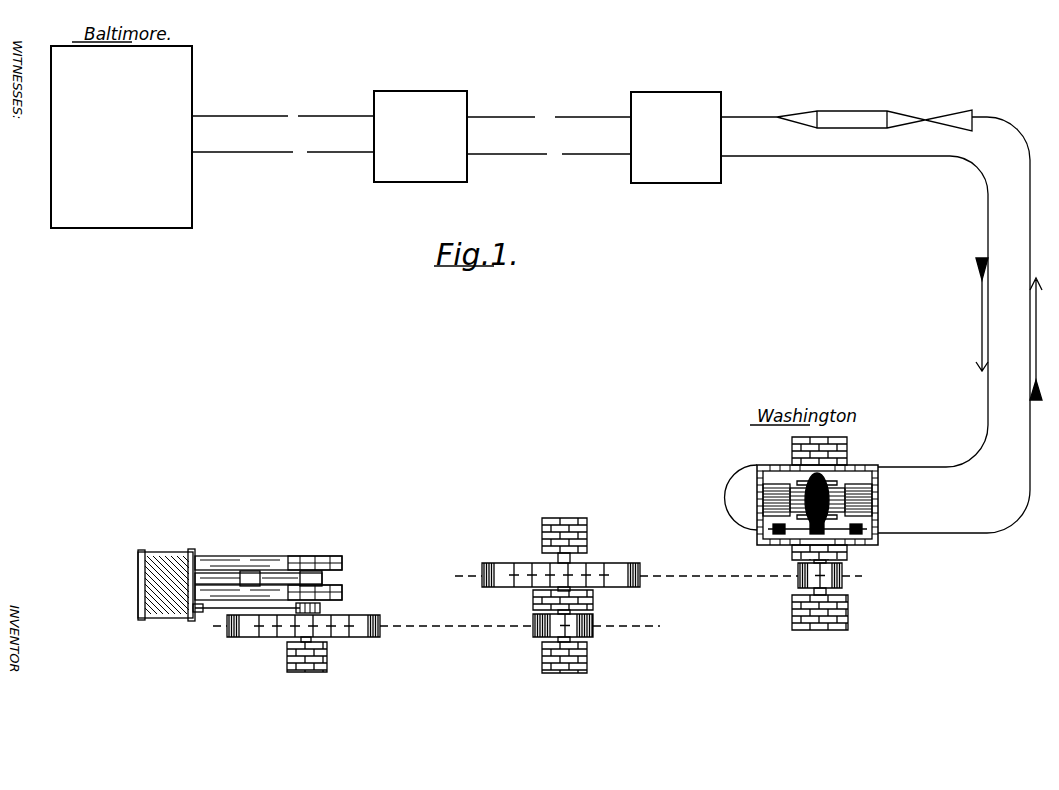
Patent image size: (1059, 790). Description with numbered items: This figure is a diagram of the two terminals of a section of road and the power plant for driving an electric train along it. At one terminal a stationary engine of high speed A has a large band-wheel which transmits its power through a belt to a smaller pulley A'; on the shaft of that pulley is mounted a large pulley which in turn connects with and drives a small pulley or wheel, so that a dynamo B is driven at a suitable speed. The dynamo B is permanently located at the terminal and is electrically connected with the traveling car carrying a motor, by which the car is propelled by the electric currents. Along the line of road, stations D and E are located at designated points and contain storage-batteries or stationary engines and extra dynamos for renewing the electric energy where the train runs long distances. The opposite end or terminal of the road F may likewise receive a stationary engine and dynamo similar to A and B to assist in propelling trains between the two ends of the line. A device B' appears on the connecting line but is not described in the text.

The opposite end or terminal of the road F is at (121, 137).
The station E is at (420, 136).
The station D is at (676, 137).
The valve / pressure regulator in pipe B' is at (874, 109).
The dynamo B is at (784, 533).
The stationary engine of high speed A is at (259, 599).
The smaller pulley A' is at (581, 631).